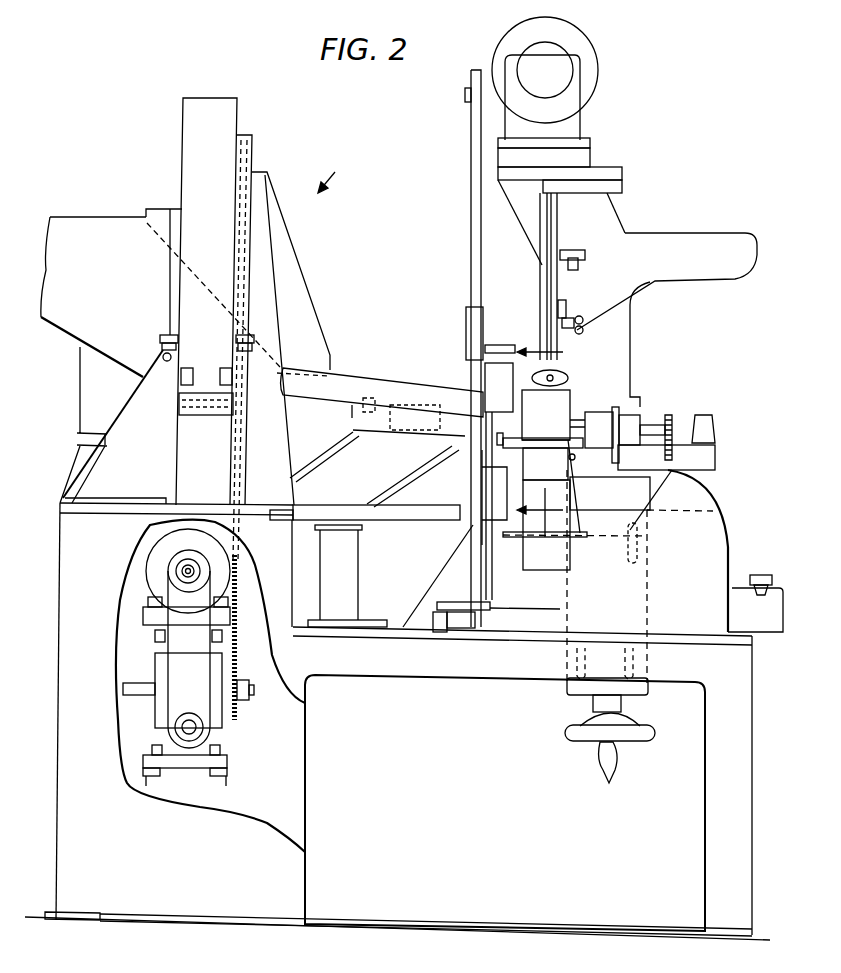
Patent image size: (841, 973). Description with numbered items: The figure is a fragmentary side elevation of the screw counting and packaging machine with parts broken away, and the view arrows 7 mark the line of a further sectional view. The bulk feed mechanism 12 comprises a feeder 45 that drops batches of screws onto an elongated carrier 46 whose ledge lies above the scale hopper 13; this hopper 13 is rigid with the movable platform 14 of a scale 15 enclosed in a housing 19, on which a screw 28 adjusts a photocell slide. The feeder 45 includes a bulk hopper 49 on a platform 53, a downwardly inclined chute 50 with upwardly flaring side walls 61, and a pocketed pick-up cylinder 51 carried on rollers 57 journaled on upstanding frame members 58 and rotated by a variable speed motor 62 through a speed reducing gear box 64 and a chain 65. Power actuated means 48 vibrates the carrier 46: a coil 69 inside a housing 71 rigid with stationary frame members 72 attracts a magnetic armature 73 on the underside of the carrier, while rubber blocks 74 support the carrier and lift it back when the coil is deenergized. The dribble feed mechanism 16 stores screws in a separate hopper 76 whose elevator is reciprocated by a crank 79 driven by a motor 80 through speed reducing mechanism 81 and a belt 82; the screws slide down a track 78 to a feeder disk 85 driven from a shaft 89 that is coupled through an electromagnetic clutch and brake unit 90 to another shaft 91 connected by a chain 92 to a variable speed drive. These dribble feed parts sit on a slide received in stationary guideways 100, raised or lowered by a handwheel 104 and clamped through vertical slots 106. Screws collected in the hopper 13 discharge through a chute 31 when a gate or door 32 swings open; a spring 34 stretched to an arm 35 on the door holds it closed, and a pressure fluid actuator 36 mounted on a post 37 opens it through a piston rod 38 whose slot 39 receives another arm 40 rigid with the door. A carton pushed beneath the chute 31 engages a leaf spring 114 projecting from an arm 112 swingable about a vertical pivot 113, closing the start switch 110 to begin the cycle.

The section arrow 7 is at (539, 432).
The bulk feed mechanism 12 is at (338, 170).
The hopper 13 is at (570, 398).
The movable platform 14 is at (578, 532).
The scale 15 is at (728, 580).
The dribble feed mechanism 16 is at (565, 371).
The housing 19 is at (731, 532).
The screw 28 is at (750, 583).
The chute 31 is at (565, 543).
The gate or door 32 is at (570, 490).
The spring 34 is at (575, 462).
The arm 35 is at (580, 455).
The pressure fluid actuator 36 is at (495, 378).
The post 37 is at (472, 549).
The piston rod 38 is at (482, 482).
The slot 39 is at (482, 470).
The arm 40 is at (497, 440).
The feeder 45 is at (139, 206).
The carrier 46 is at (400, 383).
The power actuated means 48 is at (358, 411).
The hopper 49 is at (91, 230).
The chute 50 is at (300, 342).
The member 51 is at (228, 102).
The platform 53 is at (80, 460).
The rollers 57 is at (160, 340).
The frame members 58 is at (132, 393).
The side walls 61 is at (172, 208).
The variable speed motor 62 is at (135, 572).
The speed reducing gear box 64 is at (222, 720).
The chain 65 is at (238, 650).
The coil 69 is at (400, 440).
The housing 71 is at (355, 424).
The frame members 72 is at (358, 550).
The magnetic armature 73 is at (440, 420).
The blocks 74 is at (365, 400).
The hopper 76 is at (690, 235).
The track 78 is at (556, 290).
The crank 79 is at (540, 262).
The motor 80 is at (590, 54).
The speed reducing mechanism 81 is at (578, 96).
The belt 82 is at (470, 252).
The feeder 85 is at (546, 415).
The shaft 89 is at (588, 412).
The electromagnetic clutch and brake unit 90 is at (617, 408).
The shaft 91 is at (690, 420).
The chain 92 is at (669, 412).
The guideways 100 is at (640, 698).
The handwheel 104 is at (570, 740).
The vertical slots 106 is at (640, 552).
The switch 110 is at (462, 602).
The arm 112 is at (450, 612).
The vertical pivot 113 is at (433, 622).
The leaf spring 114 is at (548, 610).